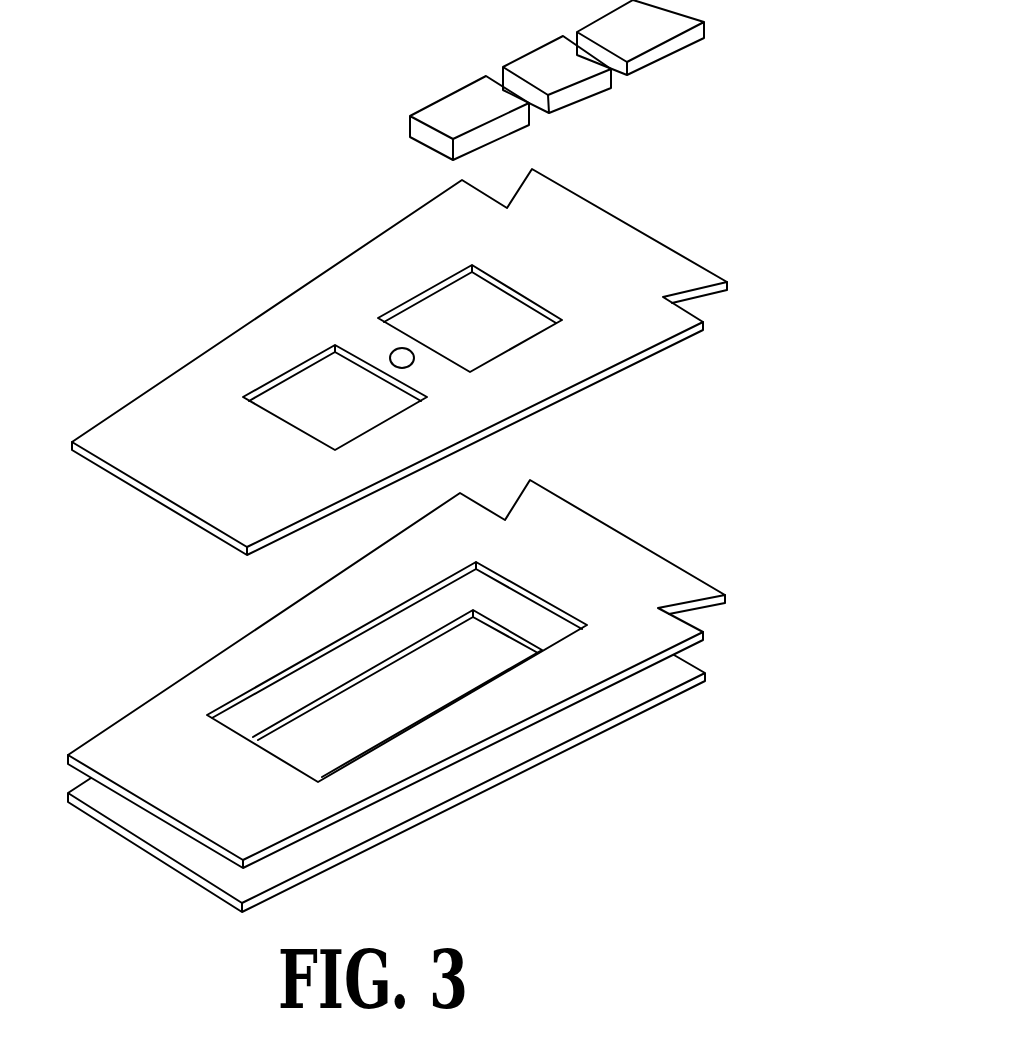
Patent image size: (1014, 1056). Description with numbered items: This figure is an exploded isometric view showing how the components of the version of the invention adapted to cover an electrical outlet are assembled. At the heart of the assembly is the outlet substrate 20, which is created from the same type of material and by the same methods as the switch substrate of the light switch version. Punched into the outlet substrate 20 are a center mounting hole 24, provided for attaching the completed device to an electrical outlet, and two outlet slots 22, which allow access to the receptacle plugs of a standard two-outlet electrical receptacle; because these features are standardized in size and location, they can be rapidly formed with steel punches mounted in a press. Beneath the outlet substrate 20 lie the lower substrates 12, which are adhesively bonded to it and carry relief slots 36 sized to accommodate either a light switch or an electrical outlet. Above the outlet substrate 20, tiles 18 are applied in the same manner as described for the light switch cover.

The lower substrates 12 is at (703, 633).
The tiles 18 is at (573, 93).
The outlet substrate 20 is at (705, 322).
The outlet slots 22 is at (450, 295).
The center mounting hole 24 is at (398, 360).
The relief slots 36 is at (255, 690).